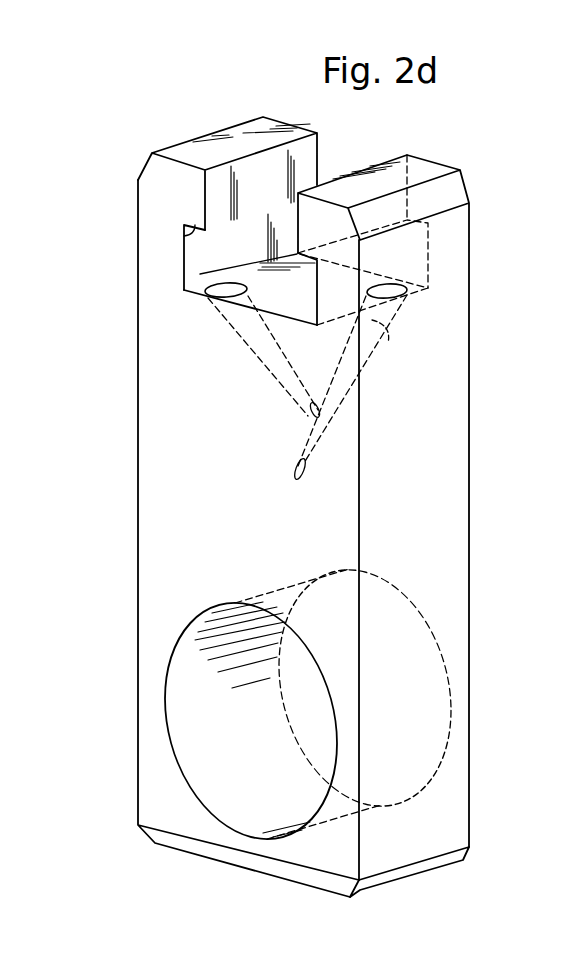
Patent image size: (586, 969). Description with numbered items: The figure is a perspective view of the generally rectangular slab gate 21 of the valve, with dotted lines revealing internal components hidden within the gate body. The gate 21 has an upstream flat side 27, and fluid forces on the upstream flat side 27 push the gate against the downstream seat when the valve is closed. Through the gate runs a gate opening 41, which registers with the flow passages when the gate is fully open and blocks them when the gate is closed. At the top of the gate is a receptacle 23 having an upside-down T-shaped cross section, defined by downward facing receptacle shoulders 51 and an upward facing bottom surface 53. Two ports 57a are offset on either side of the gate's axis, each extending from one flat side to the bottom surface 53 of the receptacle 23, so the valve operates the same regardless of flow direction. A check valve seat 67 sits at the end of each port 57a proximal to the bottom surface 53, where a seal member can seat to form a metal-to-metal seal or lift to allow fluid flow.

The gate 21 is at (505, 384).
The receptacle 23 is at (205, 255).
The upstream flat side 27 is at (172, 505).
The gate opening 41 is at (203, 737).
The receptacle shoulders 51 is at (185, 240).
The bottom surface 53 is at (233, 272).
The port 57a is at (248, 330).
The check valve seat 67 is at (380, 345).